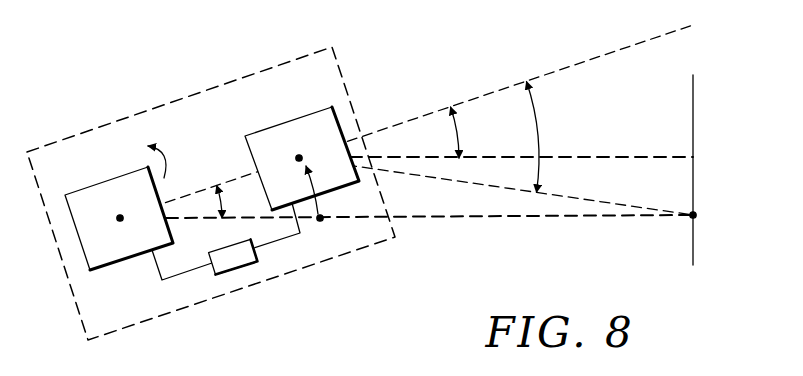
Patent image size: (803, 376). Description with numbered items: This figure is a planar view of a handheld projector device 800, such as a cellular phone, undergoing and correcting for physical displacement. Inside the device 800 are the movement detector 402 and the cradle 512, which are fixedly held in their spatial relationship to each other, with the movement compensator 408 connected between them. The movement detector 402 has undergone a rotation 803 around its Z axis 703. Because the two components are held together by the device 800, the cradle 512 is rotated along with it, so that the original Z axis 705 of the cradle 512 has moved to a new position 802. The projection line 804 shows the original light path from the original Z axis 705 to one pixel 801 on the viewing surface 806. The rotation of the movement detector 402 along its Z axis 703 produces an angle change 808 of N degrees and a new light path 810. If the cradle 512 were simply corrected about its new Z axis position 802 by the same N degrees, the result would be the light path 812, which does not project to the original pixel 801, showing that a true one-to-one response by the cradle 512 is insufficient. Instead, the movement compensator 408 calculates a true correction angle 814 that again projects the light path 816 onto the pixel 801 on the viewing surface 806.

The device 800 is at (161, 81).
The movement detector 402 is at (115, 265).
The cradle 512 is at (259, 131).
The Z axis 703 is at (120, 214).
The Z axis position 802 is at (299, 153).
The original Z axis 705 is at (320, 222).
The movement compensator 408 is at (238, 268).
The rotation 803 is at (164, 156).
The angle change 808 is at (460, 133).
The new light path 810 is at (603, 57).
The light path 812 is at (631, 155).
The projection line 804 is at (475, 217).
The true correction angle 814 is at (538, 118).
The light path 816 is at (617, 203).
The viewing surface 806 is at (694, 108).
The pixel 801 is at (698, 214).